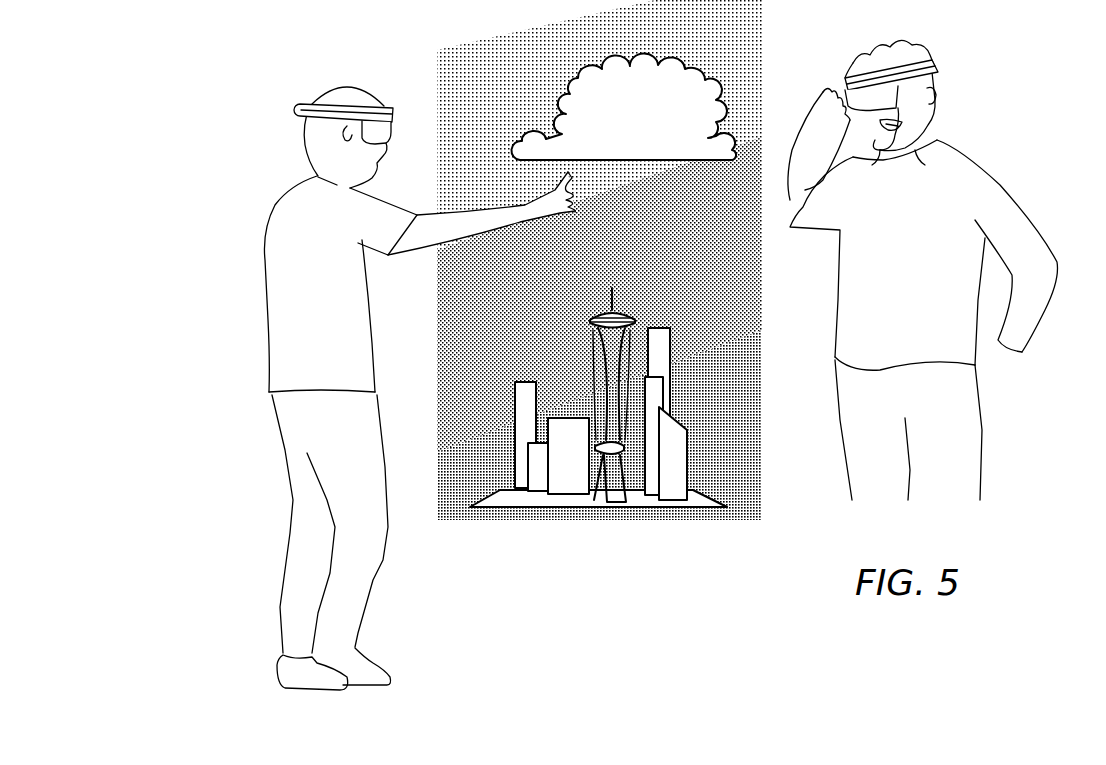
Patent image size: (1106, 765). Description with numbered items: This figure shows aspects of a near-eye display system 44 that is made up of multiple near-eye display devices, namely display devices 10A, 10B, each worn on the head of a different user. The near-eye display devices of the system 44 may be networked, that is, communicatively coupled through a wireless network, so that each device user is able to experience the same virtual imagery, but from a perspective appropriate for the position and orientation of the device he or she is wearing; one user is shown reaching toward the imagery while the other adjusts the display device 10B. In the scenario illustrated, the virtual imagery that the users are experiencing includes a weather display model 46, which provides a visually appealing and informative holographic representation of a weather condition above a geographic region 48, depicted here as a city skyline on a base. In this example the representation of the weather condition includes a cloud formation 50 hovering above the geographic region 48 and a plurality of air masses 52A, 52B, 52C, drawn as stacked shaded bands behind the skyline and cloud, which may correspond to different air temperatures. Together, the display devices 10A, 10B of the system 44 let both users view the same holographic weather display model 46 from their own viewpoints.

The near-eye display system 44 is at (213, 128).
The weather display model 46 is at (779, 511).
The display device 10A is at (383, 130).
The display device 10B is at (841, 78).
The geographic region 48 is at (598, 397).
The cloud formation 50 is at (623, 107).
The air mass 52A is at (599, 425).
The air mass 52B is at (599, 294).
The air mass 52C is at (599, 125).